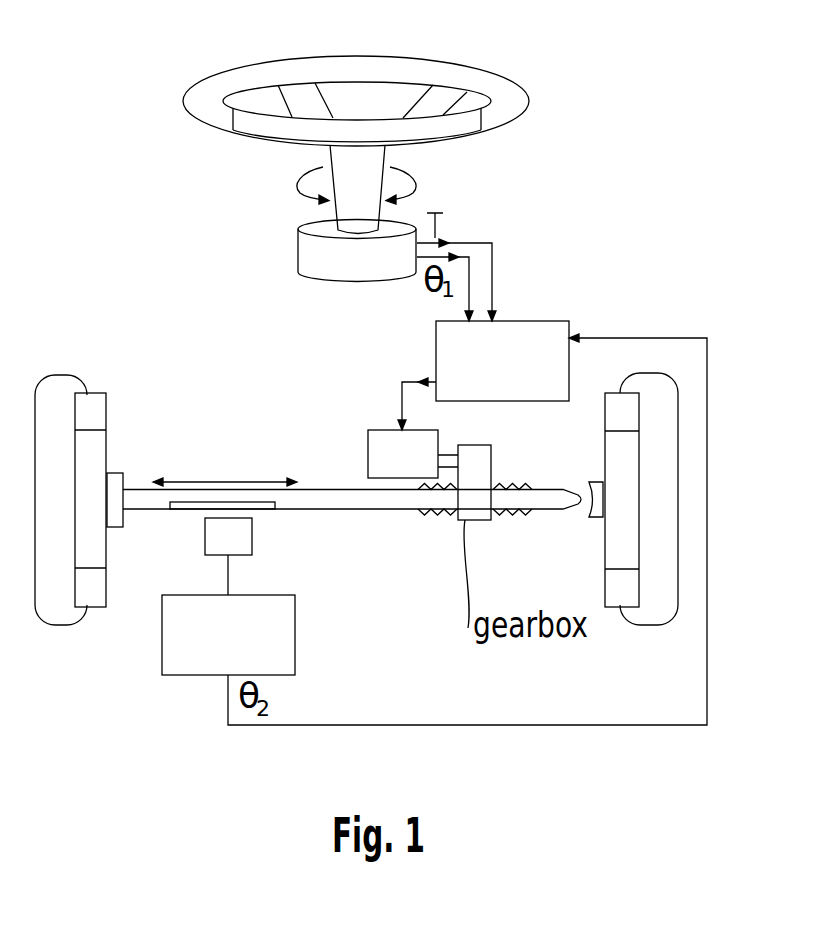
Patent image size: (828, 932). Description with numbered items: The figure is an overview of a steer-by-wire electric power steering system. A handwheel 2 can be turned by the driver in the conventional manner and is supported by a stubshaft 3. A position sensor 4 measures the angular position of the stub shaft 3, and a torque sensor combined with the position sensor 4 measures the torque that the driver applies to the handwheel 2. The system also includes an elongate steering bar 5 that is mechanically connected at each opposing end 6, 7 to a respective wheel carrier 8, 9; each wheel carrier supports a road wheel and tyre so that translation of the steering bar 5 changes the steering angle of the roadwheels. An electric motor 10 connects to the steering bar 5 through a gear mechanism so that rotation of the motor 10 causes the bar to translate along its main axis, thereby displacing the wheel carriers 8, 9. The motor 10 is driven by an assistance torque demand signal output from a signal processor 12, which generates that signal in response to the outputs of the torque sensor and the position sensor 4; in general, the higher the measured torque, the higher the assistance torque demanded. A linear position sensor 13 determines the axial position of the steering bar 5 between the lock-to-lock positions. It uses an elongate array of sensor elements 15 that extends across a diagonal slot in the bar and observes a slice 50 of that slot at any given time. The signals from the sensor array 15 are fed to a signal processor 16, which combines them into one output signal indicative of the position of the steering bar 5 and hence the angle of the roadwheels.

The handwheel 2 is at (467, 66).
The stubshaft 3 is at (337, 218).
The position sensor 4 is at (322, 263).
The steering bar 5 is at (390, 510).
The end of steering bar 6 is at (138, 490).
The end of steering bar 7 is at (565, 213).
The wheel carrier 8 is at (118, 473).
The wheel carrier 9 is at (592, 480).
The electric motor 10 is at (365, 452).
The signal processor 12 is at (527, 320).
The linear position sensor 13 is at (217, 591).
The array of sensor elements 15 is at (235, 532).
The signal processor 16 is at (170, 581).
The slice of the slot 50 is at (180, 510).